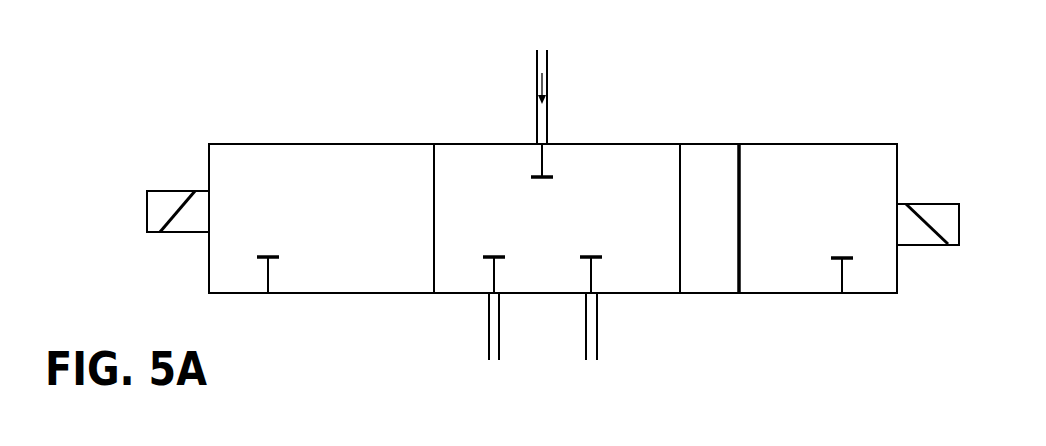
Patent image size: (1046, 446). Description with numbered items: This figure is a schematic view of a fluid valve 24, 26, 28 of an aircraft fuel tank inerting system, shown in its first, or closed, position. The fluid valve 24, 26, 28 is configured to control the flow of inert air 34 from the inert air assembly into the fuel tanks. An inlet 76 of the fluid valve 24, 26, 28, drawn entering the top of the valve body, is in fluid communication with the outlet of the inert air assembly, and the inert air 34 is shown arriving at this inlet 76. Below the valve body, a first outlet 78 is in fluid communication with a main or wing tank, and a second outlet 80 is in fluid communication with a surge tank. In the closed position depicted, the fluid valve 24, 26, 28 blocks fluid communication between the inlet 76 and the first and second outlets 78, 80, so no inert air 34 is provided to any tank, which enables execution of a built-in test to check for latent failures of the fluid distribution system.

The fluid valve 24 is at (553, 165).
The fluid valve 26 is at (553, 165).
The fluid valve 28 is at (219, 128).
The inert air 34 is at (537, 86).
The inlet 76 is at (548, 127).
The first outlet 78 is at (488, 317).
The second outlet 80 is at (598, 318).